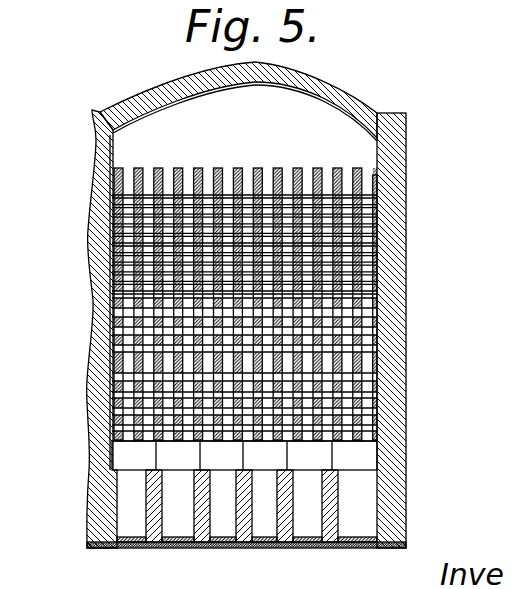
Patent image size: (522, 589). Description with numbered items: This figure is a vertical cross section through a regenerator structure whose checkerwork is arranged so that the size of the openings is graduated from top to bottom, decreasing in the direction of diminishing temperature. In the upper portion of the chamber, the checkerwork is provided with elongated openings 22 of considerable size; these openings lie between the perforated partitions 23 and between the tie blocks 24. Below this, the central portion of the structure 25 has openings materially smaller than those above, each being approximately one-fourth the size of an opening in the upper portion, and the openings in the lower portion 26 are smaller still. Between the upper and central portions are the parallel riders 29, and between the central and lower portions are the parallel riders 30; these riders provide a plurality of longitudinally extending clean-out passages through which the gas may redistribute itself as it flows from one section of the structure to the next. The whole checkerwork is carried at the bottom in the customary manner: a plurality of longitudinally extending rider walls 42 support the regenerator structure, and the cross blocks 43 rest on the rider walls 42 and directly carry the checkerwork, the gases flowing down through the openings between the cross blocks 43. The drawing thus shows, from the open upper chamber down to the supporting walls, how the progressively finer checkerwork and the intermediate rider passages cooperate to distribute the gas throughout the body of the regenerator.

The elongated openings 22 is at (252, 172).
The perforated partitions 23 is at (341, 172).
The tie blocks 24 is at (190, 196).
The central portion of the structure 25 is at (365, 313).
The lower portion 26 is at (368, 401).
The parallel riders 29 is at (108, 285).
The parallel riders 30 is at (110, 365).
The rider walls 42 is at (280, 548).
The cross blocks 43 is at (357, 457).